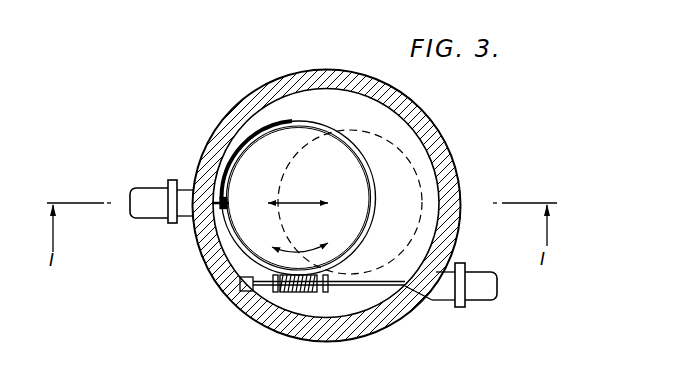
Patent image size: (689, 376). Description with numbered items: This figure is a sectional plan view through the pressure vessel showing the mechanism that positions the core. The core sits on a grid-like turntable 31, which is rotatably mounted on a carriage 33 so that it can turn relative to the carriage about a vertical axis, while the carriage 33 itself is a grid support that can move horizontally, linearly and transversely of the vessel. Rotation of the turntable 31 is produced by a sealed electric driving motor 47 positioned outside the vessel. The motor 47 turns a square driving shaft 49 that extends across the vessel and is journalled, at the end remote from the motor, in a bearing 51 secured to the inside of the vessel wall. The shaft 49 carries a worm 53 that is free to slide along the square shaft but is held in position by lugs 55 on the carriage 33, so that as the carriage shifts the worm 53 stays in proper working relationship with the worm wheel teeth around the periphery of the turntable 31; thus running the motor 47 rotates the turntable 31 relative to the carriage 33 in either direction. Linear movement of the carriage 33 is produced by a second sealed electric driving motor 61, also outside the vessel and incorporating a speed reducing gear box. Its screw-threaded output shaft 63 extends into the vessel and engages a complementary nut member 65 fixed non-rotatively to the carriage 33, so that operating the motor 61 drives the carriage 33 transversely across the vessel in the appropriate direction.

The turntable 31 is at (271, 160).
The carriage 33 is at (318, 121).
The sealed electric driving motor 47 is at (483, 287).
The square driving shaft 49 is at (388, 286).
The bearing 51 is at (245, 292).
The worm 53 is at (305, 293).
The lugs 55 is at (275, 293).
The second sealed electric driving motor 61 is at (147, 197).
The screw-threaded output shaft 63 is at (210, 212).
The nut member 65 is at (226, 201).